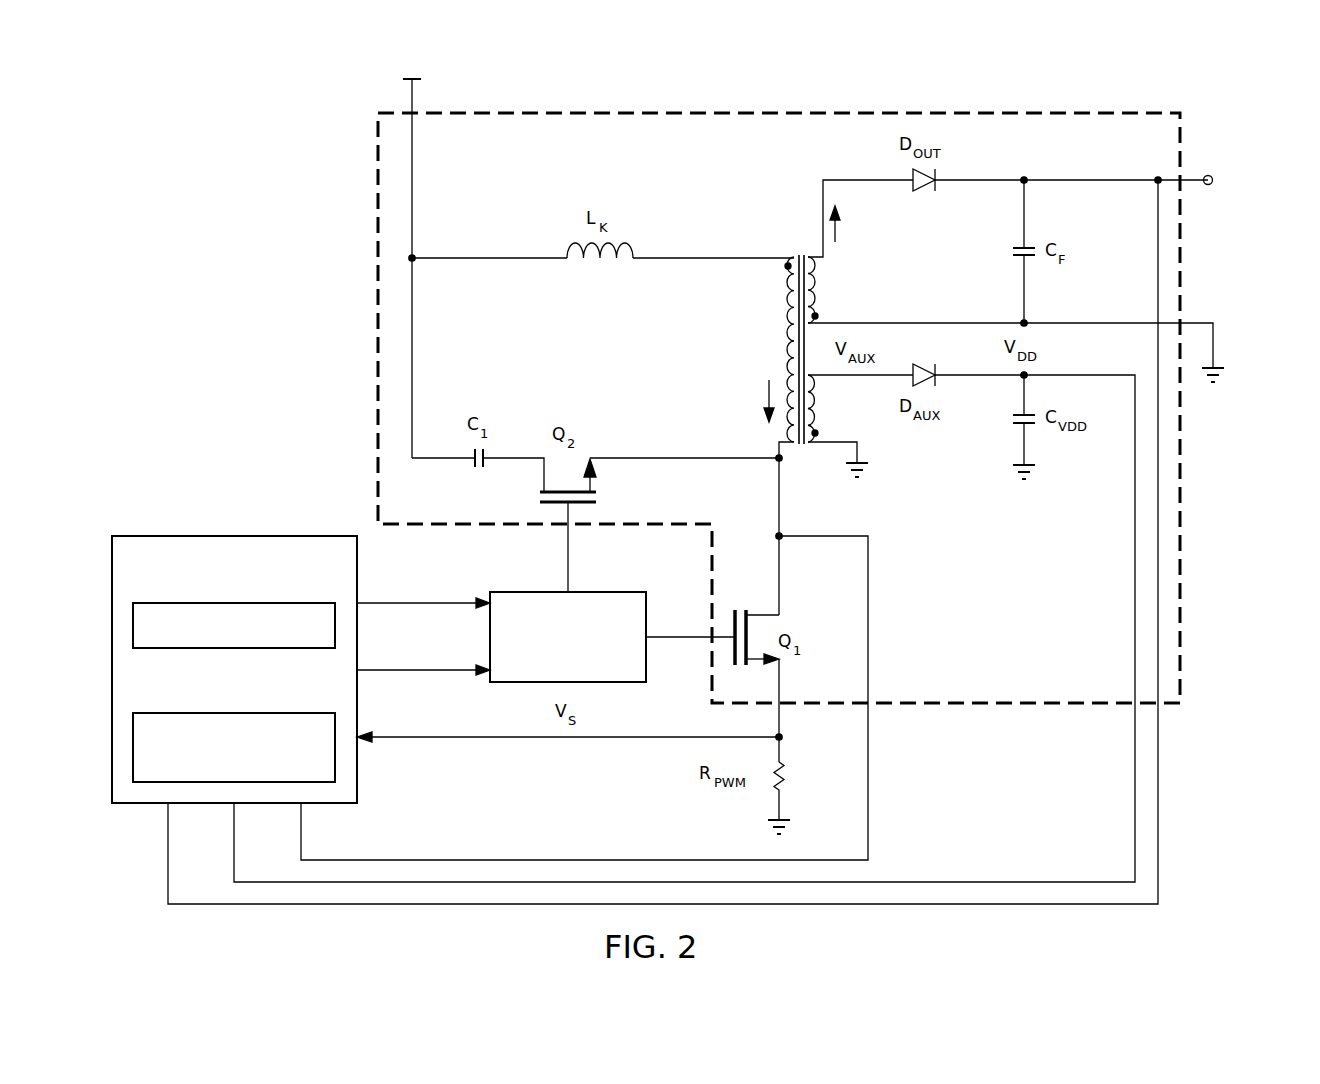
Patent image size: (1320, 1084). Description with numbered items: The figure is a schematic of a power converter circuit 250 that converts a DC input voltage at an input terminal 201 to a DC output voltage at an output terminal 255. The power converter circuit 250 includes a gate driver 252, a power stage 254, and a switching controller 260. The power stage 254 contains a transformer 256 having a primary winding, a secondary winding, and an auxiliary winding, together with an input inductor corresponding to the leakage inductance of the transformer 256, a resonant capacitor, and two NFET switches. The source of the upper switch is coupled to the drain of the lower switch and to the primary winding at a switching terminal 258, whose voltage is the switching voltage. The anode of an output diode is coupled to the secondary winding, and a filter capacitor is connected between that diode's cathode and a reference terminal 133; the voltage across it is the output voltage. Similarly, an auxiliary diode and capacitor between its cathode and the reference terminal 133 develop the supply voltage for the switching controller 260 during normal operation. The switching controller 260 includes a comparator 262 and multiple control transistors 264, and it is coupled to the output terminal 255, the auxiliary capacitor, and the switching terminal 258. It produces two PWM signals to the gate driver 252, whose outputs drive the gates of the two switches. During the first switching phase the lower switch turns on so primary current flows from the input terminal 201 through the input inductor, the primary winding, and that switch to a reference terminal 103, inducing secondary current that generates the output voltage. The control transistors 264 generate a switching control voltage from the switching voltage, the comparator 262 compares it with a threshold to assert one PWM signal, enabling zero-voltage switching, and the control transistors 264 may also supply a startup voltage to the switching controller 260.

The power converter circuit 250 is at (218, 130).
The input terminal 201 is at (403, 80).
The power stage 254 is at (838, 104).
The output terminal 255 is at (1208, 176).
The transformer 256 is at (800, 238).
The switching terminal 258 is at (776, 462).
The gate driver 252 is at (545, 590).
The switching controller 260 is at (632, 542).
The comparator 262 is at (205, 650).
The control transistors 264 is at (263, 712).
The reference terminal 133 is at (1228, 374).
The reference terminal 103 is at (771, 823).